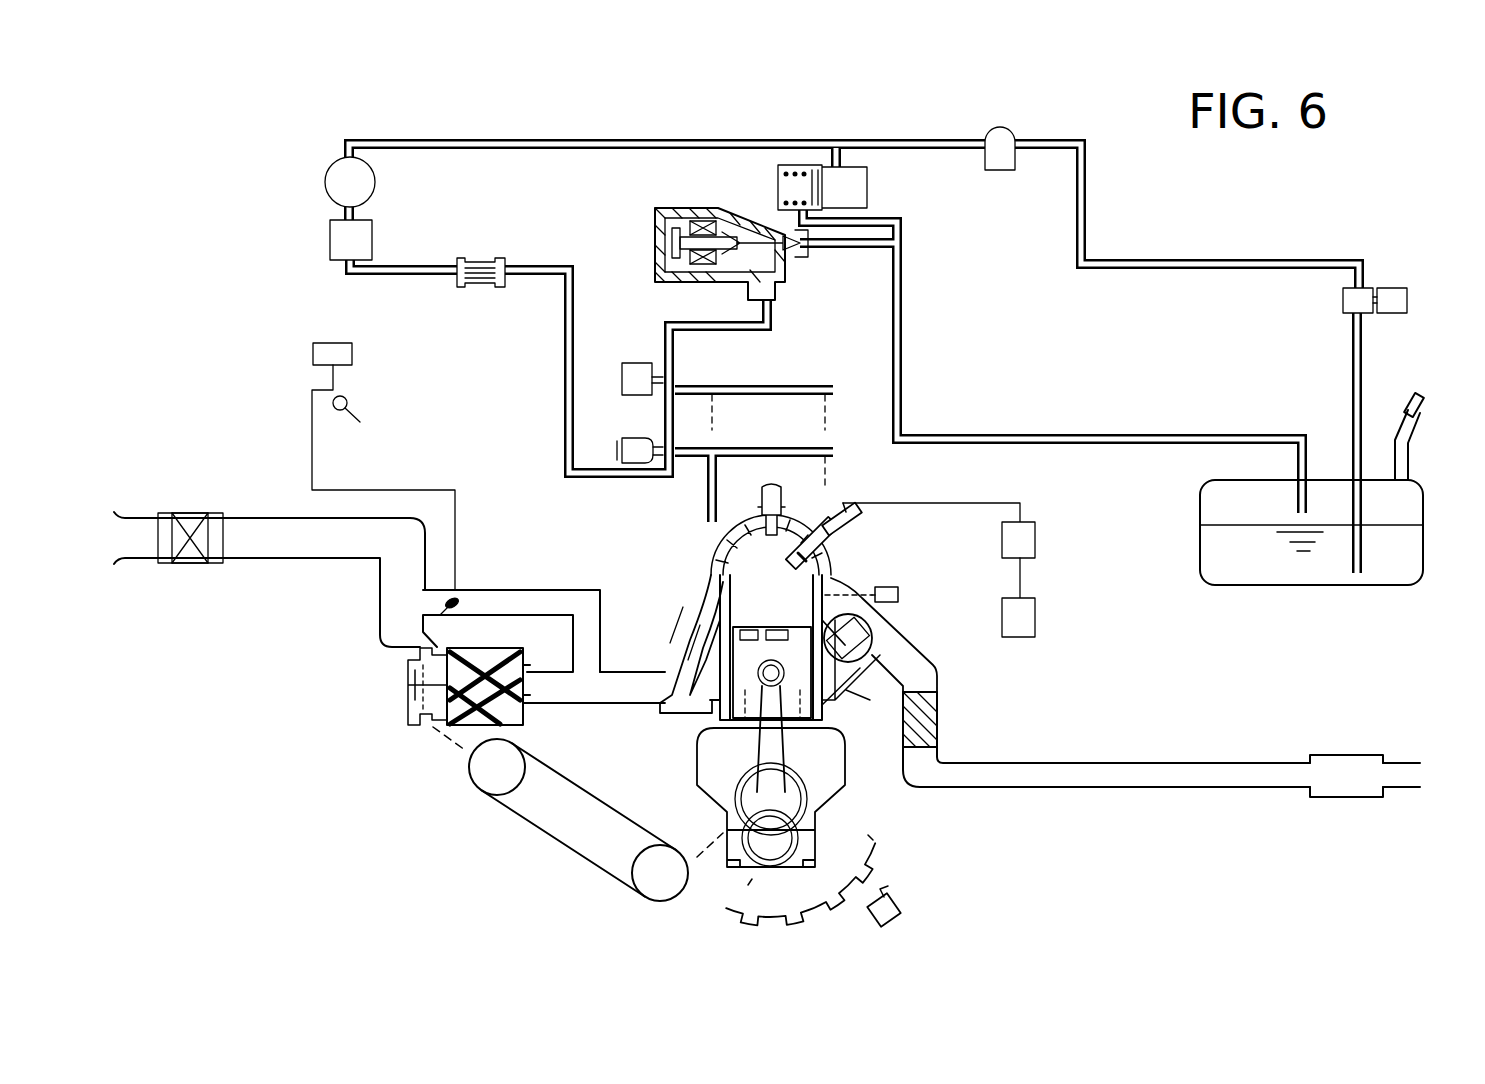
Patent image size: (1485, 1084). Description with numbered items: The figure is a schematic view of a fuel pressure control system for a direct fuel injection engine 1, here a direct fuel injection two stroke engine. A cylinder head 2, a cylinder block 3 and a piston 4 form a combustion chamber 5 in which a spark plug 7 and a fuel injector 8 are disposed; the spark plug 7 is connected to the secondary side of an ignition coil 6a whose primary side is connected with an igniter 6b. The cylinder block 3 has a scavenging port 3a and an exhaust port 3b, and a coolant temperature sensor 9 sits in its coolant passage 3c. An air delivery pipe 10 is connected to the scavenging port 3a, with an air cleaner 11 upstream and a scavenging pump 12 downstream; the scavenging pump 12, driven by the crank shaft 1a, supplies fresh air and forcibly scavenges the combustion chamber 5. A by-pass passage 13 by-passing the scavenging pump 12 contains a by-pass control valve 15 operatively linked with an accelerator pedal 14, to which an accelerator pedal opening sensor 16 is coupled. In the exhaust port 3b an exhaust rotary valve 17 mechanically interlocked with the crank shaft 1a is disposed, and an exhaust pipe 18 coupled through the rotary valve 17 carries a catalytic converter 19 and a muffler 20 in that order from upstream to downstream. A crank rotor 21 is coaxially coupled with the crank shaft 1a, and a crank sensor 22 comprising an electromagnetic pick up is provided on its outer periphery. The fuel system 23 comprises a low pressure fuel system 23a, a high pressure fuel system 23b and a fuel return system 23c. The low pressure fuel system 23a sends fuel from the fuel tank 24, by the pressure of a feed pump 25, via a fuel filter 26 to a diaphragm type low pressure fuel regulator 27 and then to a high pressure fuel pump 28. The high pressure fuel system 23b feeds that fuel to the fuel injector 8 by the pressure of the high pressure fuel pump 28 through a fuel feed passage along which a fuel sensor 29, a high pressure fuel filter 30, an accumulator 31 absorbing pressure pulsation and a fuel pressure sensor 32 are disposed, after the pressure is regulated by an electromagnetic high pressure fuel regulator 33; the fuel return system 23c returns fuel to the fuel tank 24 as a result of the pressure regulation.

The direct fuel injection engine 1 is at (810, 701).
The crank shaft 1a is at (825, 795).
The cylinder head 2 is at (843, 555).
The cylinder block 3 is at (690, 618).
The scavenging port 3a is at (668, 660).
The exhaust port 3b is at (900, 645).
The coolant passage 3c is at (860, 590).
The piston 4 is at (705, 720).
The combustion chamber 5 is at (715, 565).
The ignition coil 6a is at (1035, 535).
The igniter 6b is at (1035, 612).
The spark plug 7 is at (855, 527).
The fuel injector 8 is at (760, 505).
The coolant temperature sensor 9 is at (900, 596).
The air delivery pipe 10 is at (323, 560).
The air cleaner 11 is at (190, 512).
The scavenging pump 12 is at (408, 680).
The by-pass passage 13 is at (548, 590).
The accelerator pedal 14 is at (363, 400).
The by-pass control valve 15 is at (460, 600).
The accelerator pedal opening sensor 16 is at (312, 352).
The exhaust rotary valve 17 is at (835, 700).
The exhaust pipe 18 is at (1095, 763).
The catalytic converter 19 is at (937, 712).
The muffler 20 is at (1350, 755).
The crank rotor 21 is at (880, 882).
The crank sensor 22 is at (900, 908).
The fuel system 23 is at (1170, 247).
The low pressure fuel system 23a is at (560, 140).
The high pressure fuel system 23b is at (735, 330).
The fuel return system 23c is at (902, 325).
The fuel tank 24 is at (1290, 587).
The feed pump 25 is at (1392, 286).
The fuel filter 26 is at (1000, 172).
The low pressure fuel regulator 27 is at (867, 180).
The high pressure fuel pump 28 is at (325, 182).
The fuel sensor 29 is at (330, 240).
The high pressure fuel filter 30 is at (483, 258).
The accumulator 31 is at (630, 465).
The fuel pressure sensor 32 is at (637, 362).
The high pressure fuel regulator 33 is at (655, 225).